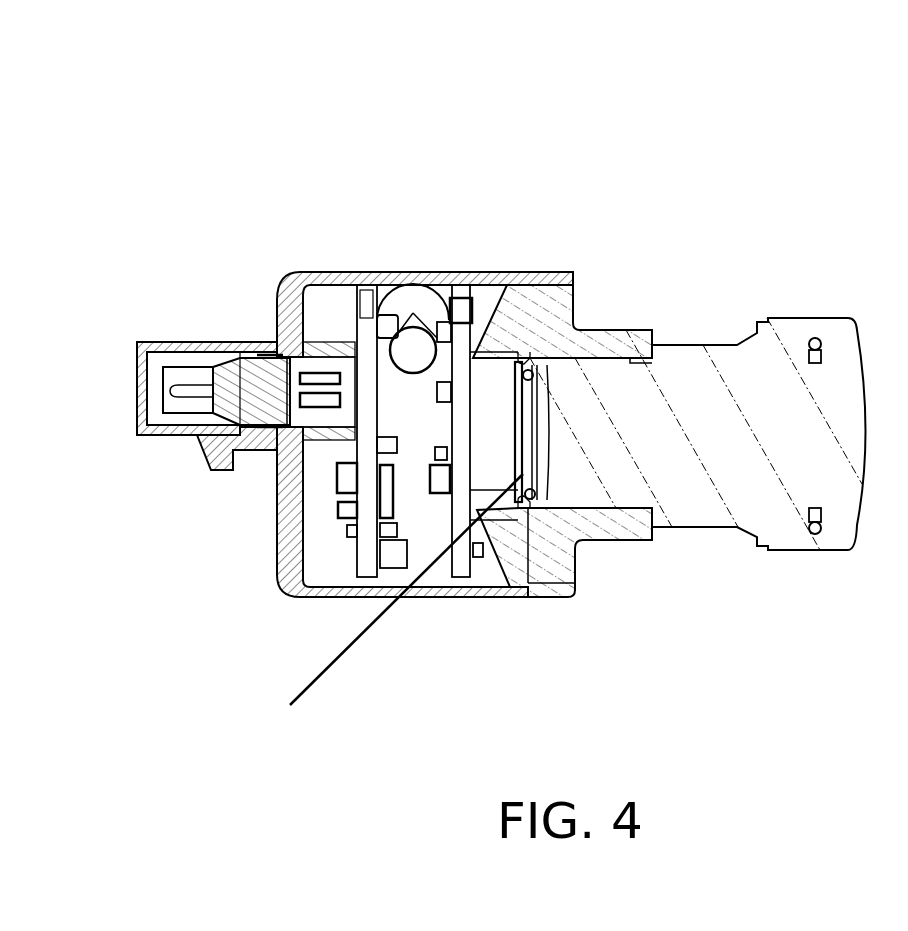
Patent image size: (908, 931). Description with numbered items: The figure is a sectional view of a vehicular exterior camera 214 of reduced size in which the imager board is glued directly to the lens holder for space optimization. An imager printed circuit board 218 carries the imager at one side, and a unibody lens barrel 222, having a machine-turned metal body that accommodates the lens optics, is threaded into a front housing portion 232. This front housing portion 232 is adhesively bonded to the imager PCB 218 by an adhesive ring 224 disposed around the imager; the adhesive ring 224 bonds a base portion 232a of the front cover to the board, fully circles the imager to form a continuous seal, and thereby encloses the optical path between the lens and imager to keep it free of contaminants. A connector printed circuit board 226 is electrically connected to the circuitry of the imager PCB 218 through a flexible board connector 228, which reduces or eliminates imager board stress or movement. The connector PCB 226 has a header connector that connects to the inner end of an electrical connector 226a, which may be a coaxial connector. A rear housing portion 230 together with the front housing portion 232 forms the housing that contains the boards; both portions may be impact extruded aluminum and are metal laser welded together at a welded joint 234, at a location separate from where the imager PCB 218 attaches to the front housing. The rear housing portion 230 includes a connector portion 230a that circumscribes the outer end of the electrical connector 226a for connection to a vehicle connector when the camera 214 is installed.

The vehicular exterior camera 214 is at (676, 184).
The imager printed circuit board 218 is at (457, 340).
The unibody lens barrel 222 is at (710, 345).
The adhesive ring 224 is at (470, 332).
The connector printed circuit board 226 is at (363, 342).
The electrical connector 226a is at (265, 370).
The flexible board connector 228 is at (398, 375).
The rear housing portion 230 is at (430, 594).
The connector portion 230a is at (147, 440).
The front housing portion 232 is at (560, 547).
The base portion 232a is at (487, 335).
The welded joint 234 is at (528, 596).